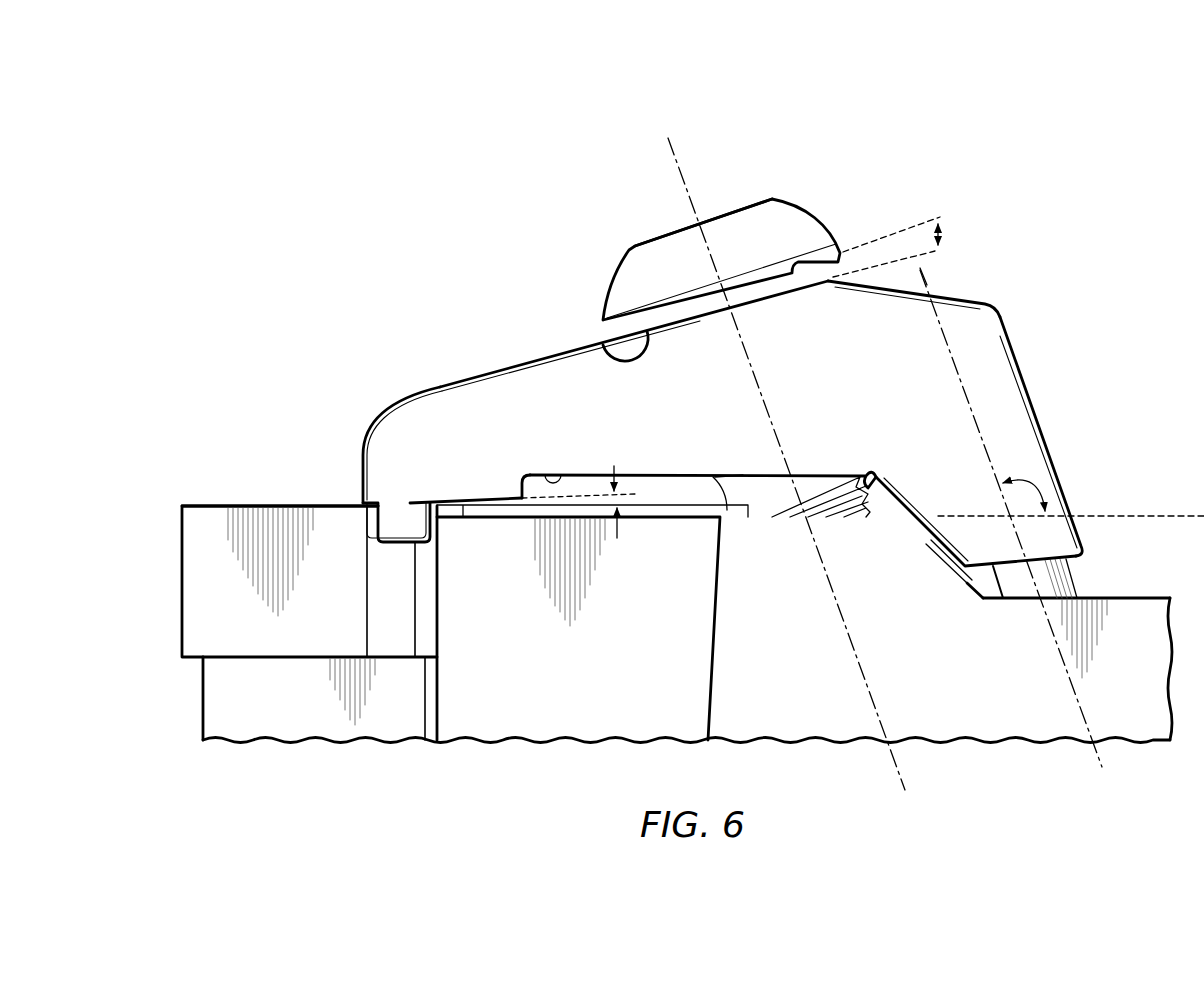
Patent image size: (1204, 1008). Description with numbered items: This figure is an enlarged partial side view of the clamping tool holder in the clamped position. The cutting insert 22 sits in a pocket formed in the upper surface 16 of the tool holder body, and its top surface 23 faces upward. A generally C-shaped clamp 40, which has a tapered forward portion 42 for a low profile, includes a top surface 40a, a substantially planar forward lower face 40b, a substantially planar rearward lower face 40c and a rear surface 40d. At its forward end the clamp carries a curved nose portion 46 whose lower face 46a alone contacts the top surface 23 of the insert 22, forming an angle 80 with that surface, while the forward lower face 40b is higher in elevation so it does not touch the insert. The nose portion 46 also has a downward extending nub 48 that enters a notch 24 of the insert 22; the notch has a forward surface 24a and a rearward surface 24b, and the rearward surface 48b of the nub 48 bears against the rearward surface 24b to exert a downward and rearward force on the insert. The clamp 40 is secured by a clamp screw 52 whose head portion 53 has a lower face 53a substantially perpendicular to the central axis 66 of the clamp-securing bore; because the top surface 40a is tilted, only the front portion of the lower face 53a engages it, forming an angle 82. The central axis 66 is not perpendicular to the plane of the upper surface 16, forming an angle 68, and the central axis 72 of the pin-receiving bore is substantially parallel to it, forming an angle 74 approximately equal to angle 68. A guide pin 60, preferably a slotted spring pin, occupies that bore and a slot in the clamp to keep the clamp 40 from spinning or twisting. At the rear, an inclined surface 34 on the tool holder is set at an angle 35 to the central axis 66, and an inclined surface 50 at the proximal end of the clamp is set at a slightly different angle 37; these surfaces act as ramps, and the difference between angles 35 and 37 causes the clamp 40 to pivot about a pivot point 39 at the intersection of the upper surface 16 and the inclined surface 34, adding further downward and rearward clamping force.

The upper surface 16 is at (760, 515).
The cutting insert 22 is at (322, 598).
The top surface 23 is at (222, 506).
The notch 24 is at (396, 648).
The forward surface 24a is at (382, 591).
The rearward surface 24b is at (428, 627).
The inclined surface 34 is at (975, 583).
The angle 35 is at (952, 569).
The angle 37 is at (819, 539).
The pivot point 39 is at (918, 517).
The clamp 40 is at (687, 419).
The top surface 40a is at (566, 347).
The forward lower face 40b is at (555, 485).
The rearward lower face 40c is at (876, 477).
The rear surface 40d is at (1020, 373).
The tapered forward portion 42 is at (371, 384).
The curved nose portion 46 is at (346, 457).
The lower face 46a is at (474, 505).
The nub 48 is at (404, 522).
The rearward surface 48b is at (443, 504).
The inclined surface 50 is at (904, 518).
The clamp screw 52 is at (689, 243).
The head portion 53 is at (752, 215).
The lower face 53a is at (598, 330).
The guide pin 60 is at (1036, 640).
The central axis 66 is at (668, 150).
The angle 68 is at (962, 511).
The central axis 72 is at (928, 282).
The angle 74 is at (1035, 490).
The angle 80 is at (614, 466).
The angle 82 is at (940, 233).